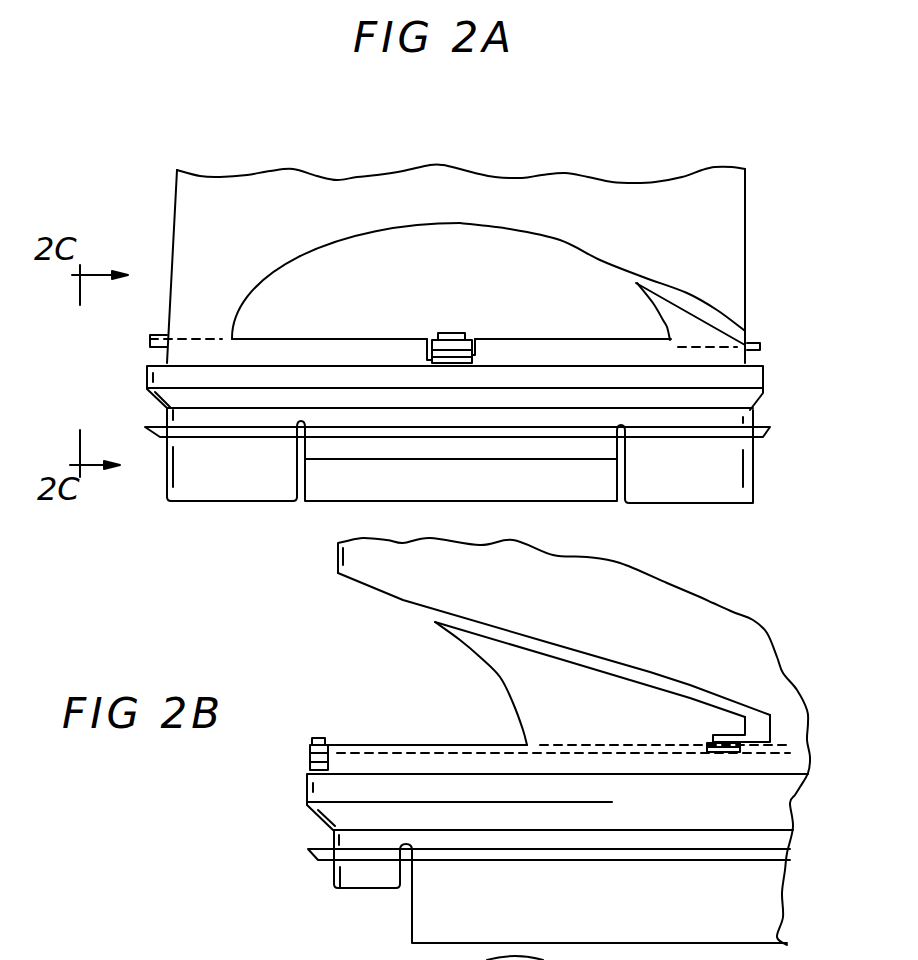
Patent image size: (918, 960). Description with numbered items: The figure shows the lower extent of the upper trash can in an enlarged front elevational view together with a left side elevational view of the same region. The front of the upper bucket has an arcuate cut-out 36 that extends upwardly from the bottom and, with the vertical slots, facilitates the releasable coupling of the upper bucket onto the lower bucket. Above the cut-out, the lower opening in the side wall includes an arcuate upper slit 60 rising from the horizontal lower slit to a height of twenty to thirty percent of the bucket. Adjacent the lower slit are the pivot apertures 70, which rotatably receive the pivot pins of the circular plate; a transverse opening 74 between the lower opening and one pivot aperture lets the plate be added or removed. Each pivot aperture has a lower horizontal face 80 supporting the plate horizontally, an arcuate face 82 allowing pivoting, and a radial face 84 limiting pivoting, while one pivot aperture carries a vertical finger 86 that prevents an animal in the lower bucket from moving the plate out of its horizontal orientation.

In FIG. 2A, the arcuate cut-out 36 is at (368, 485).
In FIG. 2A, the arcuate upper slit 60 is at (527, 235).
In FIG. 2B, the pivot apertures 70 is at (750, 738).
In FIG. 2B, the transverse opening 74 is at (651, 672).
In FIG. 2B, the lower horizontal face 80 is at (722, 755).
In FIG. 2B, the arcuate face 82 is at (710, 724).
In FIG. 2B, the radial face 84 is at (743, 733).
In FIG. 2B, the vertical finger 86 is at (753, 737).